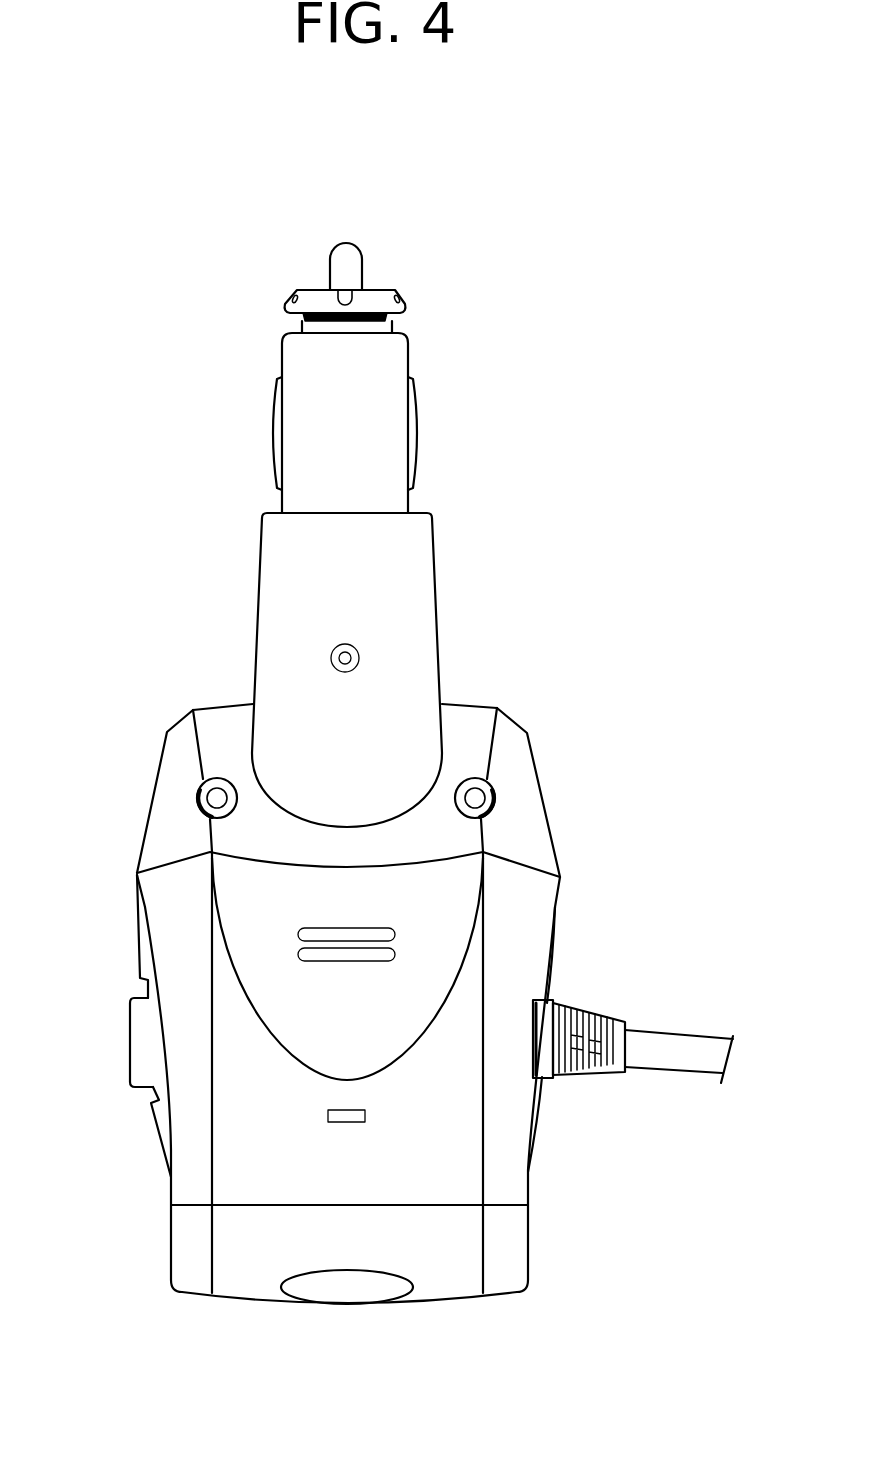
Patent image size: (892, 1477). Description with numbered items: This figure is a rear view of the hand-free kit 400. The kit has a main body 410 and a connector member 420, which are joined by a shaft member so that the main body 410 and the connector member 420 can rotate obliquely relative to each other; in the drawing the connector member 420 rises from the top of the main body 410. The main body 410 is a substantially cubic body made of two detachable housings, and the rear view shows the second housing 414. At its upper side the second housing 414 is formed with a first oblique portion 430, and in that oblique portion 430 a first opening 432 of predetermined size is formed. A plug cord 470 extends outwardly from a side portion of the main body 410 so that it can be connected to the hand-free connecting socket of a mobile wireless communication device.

The hand-free kit 400 is at (155, 205).
The main body 410 is at (577, 790).
The second housing 414 is at (252, 1123).
The connector member 420 is at (465, 530).
The first oblique portion 430 is at (458, 720).
The first opening 432 is at (456, 775).
The plug cord 470 is at (667, 1053).